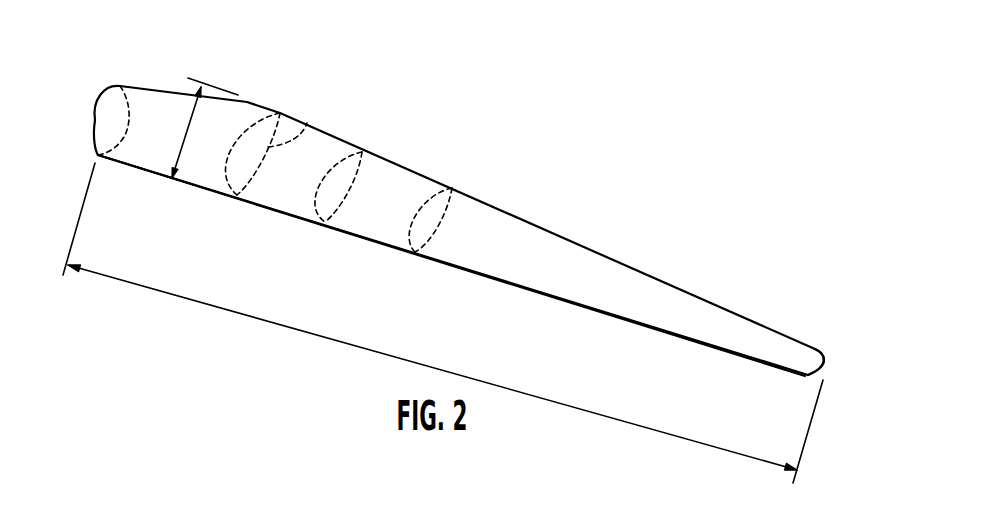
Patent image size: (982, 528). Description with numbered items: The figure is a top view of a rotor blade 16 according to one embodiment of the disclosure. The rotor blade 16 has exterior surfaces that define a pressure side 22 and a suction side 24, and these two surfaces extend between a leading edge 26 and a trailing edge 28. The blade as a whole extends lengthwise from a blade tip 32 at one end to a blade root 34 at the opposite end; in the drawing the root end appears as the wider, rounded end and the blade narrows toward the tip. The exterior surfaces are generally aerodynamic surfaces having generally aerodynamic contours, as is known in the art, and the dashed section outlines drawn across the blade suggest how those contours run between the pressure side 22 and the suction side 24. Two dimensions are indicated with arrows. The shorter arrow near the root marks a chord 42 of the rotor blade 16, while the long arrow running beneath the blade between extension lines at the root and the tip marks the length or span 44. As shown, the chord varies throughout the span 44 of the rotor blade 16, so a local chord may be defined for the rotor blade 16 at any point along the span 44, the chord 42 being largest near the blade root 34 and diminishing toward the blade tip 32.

The rotor blade 16 is at (437, 162).
The pressure side 22 is at (306, 124).
The suction side 24 is at (250, 113).
The leading edge 26 is at (282, 212).
The trailing edge 28 is at (335, 132).
The blade tip 32 is at (827, 368).
The blade root 34 is at (97, 108).
The chord 42 is at (187, 123).
The span 44 is at (320, 337).